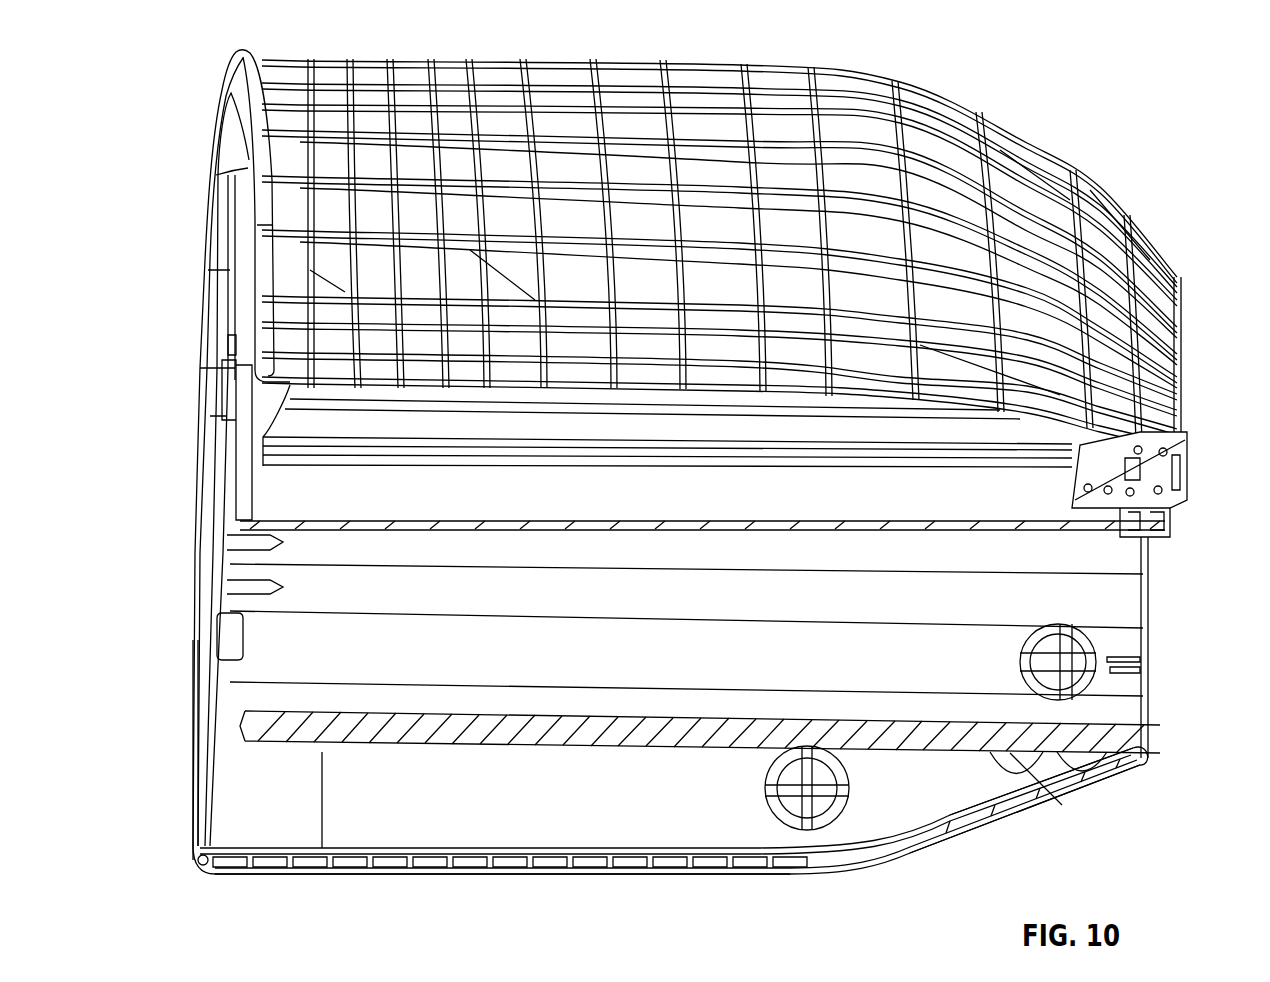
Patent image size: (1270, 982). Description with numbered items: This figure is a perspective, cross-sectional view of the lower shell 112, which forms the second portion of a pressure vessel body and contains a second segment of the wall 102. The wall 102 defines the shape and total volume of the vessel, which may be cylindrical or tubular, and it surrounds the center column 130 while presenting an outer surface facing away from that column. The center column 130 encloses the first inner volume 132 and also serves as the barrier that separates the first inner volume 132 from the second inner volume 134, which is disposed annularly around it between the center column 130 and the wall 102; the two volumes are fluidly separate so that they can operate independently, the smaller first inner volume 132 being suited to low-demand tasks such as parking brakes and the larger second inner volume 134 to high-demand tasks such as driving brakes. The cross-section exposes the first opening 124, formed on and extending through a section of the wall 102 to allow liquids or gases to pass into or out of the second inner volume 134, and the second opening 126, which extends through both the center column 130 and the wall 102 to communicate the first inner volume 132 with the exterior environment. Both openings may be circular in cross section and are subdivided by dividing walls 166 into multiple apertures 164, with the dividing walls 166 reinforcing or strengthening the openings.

The lower shell 112 is at (1152, 62).
The first inner volume 132 is at (1067, 552).
The apertures 164 is at (1083, 663).
The dividing walls 166 is at (1087, 677).
The center column 130 is at (252, 723).
The second inner volume 134 is at (258, 792).
The first opening 124 is at (800, 877).
The wall 102 is at (515, 872).
The second opening 126 is at (1052, 763).